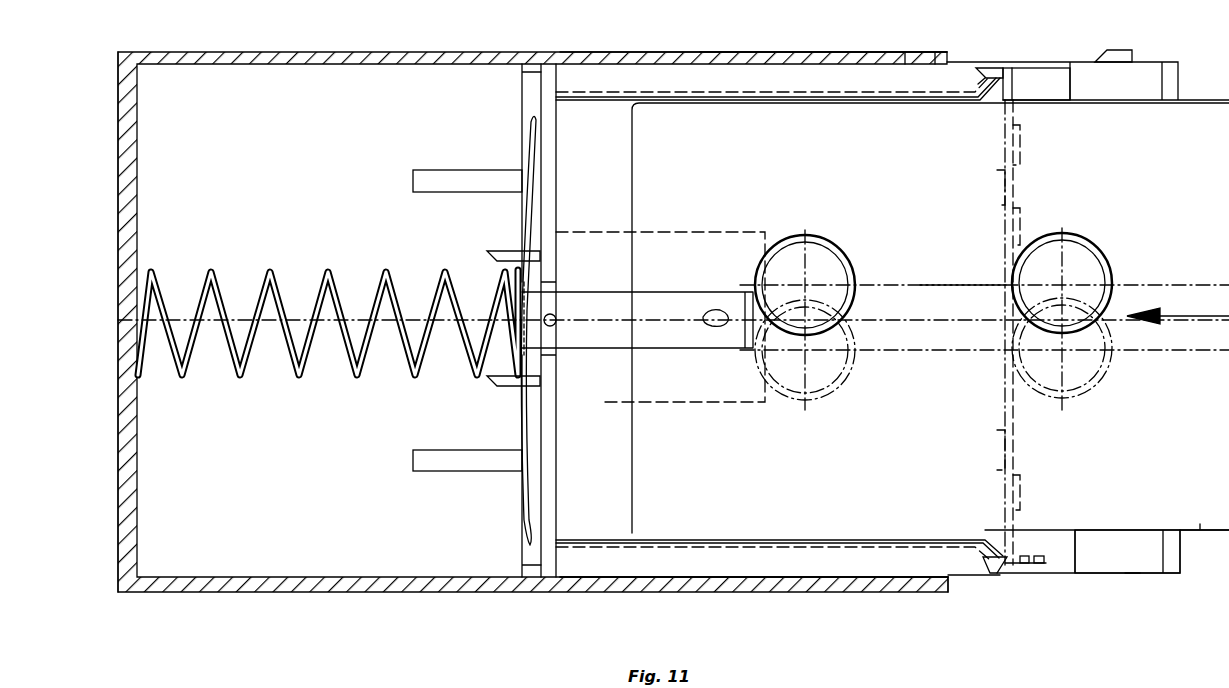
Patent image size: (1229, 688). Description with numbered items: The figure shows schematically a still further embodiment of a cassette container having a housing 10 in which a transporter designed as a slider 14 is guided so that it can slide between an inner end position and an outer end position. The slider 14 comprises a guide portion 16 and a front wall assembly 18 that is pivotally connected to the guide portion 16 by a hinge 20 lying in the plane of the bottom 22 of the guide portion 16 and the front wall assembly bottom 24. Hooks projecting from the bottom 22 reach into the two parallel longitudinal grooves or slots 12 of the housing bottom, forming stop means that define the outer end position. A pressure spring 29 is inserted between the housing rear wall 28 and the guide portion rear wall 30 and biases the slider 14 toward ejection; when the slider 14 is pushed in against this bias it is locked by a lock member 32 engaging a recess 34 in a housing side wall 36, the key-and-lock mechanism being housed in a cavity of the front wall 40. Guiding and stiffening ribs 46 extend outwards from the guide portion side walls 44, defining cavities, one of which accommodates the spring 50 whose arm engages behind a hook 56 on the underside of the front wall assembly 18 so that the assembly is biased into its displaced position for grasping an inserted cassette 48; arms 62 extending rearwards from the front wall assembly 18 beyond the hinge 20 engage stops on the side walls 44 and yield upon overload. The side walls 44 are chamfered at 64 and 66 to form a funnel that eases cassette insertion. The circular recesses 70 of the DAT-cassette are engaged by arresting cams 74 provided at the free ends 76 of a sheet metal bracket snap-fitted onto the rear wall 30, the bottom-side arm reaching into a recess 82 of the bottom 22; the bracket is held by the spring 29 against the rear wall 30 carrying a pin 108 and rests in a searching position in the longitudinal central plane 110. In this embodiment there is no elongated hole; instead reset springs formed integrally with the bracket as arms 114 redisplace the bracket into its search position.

The housing 10 is at (260, 50).
The longitudinal grooves or slots 12 is at (432, 180).
The slider 14 is at (1064, 42).
The guide portion 16 is at (957, 578).
The front wall assembly 18 is at (1130, 578).
The hinge 20 is at (1006, 185).
The bottom of guide portion 22 is at (592, 543).
The front wall assembly bottom 24 is at (1030, 80).
The housing rear wall 28 is at (137, 478).
The pressure spring 29 is at (245, 364).
The guide portion rear wall 30 is at (557, 418).
The lock member 32 is at (1122, 50).
The recess 34 is at (912, 52).
The housing side wall 36 is at (828, 52).
The front wall 40 is at (1160, 570).
The guide portion side walls 44 is at (754, 102).
The guiding and stiffening ribs 46 is at (633, 64).
The cassette 48 is at (1200, 532).
The spring 50 is at (1022, 556).
The hook 56 is at (1040, 556).
The arms 62 is at (1000, 64).
The chamfer 64 is at (690, 84).
The chamfer 66 is at (992, 96).
The circular depressions or recesses 70 is at (822, 252).
The arresting cams 74 is at (712, 326).
The free ends of bracket arms 76 is at (655, 342).
The recess 82 is at (600, 232).
The pin 108 is at (552, 326).
The longitudinal central plane 110 is at (922, 322).
The arms 114 is at (530, 212).